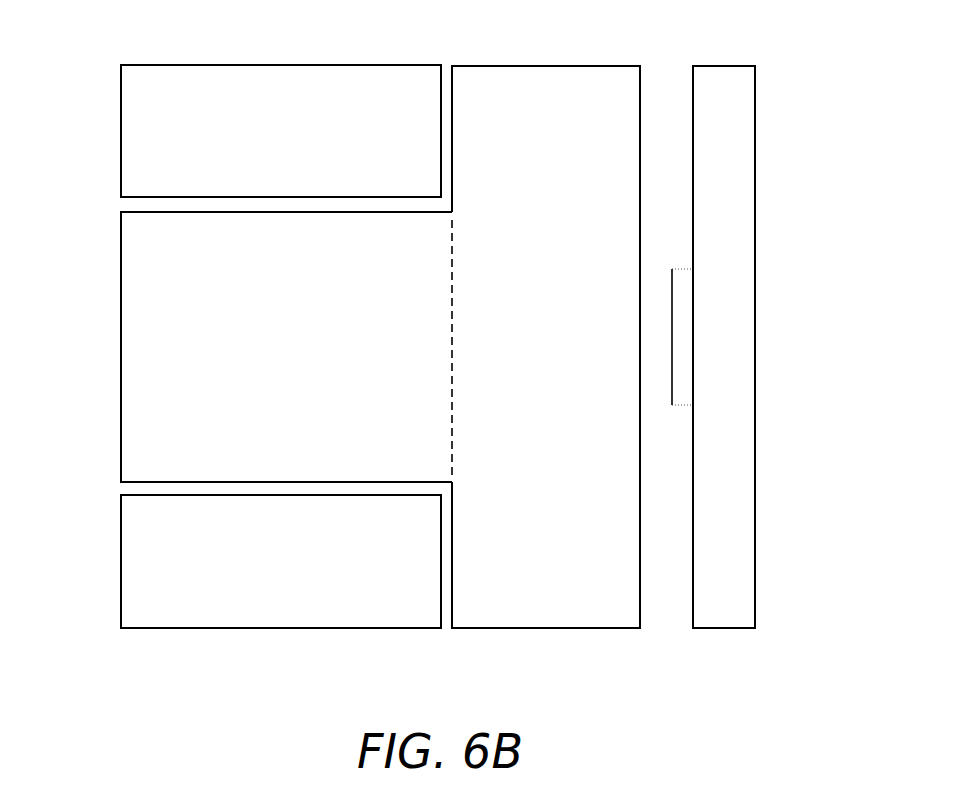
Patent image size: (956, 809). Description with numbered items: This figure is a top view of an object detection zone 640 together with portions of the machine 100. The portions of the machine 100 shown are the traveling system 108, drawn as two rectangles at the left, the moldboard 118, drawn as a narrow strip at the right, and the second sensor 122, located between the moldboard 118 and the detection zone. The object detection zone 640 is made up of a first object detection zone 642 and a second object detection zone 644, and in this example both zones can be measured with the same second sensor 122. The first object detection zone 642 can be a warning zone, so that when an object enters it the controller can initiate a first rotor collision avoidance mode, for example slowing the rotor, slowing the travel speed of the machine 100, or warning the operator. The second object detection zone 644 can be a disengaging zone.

The machine 100 is at (768, 50).
The traveling system 108 is at (188, 65).
The moldboard 118 is at (740, 628).
The second sensor 122 is at (687, 268).
The object detection zone 640 is at (460, 366).
The first object detection zone 642 is at (120, 348).
The second object detection zone 644 is at (547, 628).